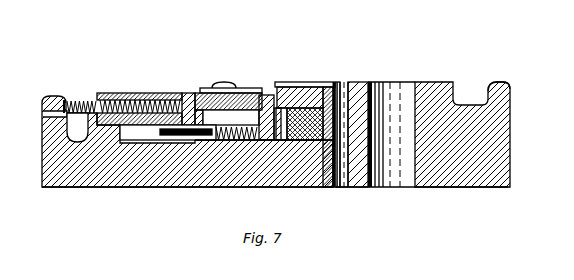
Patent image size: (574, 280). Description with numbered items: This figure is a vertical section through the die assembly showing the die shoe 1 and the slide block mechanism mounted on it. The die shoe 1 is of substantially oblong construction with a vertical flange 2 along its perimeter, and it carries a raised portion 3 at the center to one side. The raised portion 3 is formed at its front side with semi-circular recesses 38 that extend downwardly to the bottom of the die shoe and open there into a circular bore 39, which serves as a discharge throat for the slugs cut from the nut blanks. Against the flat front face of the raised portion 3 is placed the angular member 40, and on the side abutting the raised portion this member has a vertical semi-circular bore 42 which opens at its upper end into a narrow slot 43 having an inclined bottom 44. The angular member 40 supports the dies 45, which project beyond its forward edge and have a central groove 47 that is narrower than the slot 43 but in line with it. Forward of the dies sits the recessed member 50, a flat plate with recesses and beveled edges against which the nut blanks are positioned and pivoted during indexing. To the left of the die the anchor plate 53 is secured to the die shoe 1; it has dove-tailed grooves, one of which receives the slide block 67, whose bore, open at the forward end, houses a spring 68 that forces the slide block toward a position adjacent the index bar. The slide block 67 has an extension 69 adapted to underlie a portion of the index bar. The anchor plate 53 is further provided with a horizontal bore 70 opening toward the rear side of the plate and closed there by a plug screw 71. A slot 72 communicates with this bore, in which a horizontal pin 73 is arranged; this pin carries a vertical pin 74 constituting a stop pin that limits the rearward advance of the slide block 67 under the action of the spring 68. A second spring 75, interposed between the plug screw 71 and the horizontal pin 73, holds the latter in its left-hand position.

The die shoe 1 is at (500, 167).
The vertical flange 2 is at (505, 88).
The raised portion 3 is at (435, 90).
The semi-circular recesses 38 is at (391, 122).
The circular bore 39 is at (340, 188).
The angular member 40 is at (306, 142).
The vertical semi-circular bore 42 is at (352, 100).
The narrow slot 43 is at (328, 85).
The inclined bottom 44 is at (338, 100).
The dies 45 is at (285, 87).
The central groove 47 is at (283, 82).
The recessed member 50 is at (266, 95).
The anchor plate 53 is at (98, 131).
The slide block 67 is at (134, 93).
The spring 68 is at (90, 100).
The extension 69 is at (188, 95).
The horizontal bore 70 is at (165, 141).
The plug screw 71 is at (250, 142).
The slot 72 is at (214, 122).
The horizontal pin 73 is at (190, 136).
The vertical pin 74 is at (217, 88).
The spring 75 is at (214, 142).